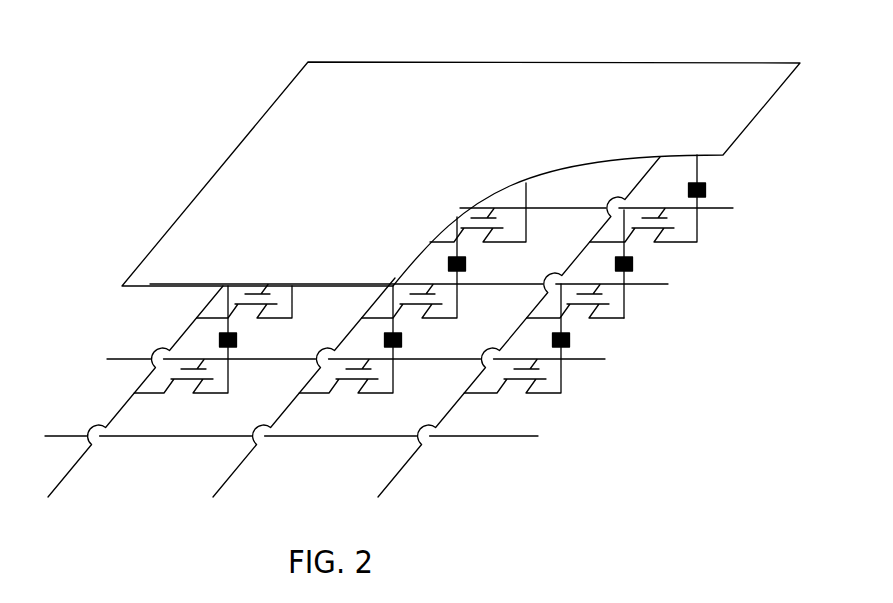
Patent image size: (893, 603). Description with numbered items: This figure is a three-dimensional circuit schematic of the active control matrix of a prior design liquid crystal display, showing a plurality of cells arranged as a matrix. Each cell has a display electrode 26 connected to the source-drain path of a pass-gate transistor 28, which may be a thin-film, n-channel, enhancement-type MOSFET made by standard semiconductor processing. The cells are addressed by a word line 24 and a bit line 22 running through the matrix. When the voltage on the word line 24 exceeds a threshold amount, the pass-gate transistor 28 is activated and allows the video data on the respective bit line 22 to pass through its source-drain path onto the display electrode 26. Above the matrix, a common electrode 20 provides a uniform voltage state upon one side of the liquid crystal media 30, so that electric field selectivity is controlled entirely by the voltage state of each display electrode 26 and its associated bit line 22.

The common electrode 20 is at (633, 255).
The bit line 22 is at (398, 473).
The word line 24 is at (587, 370).
The display electrode 26 is at (632, 276).
The pass-gate transistor 28 is at (538, 409).
The liquid crystal media 30 is at (704, 191).